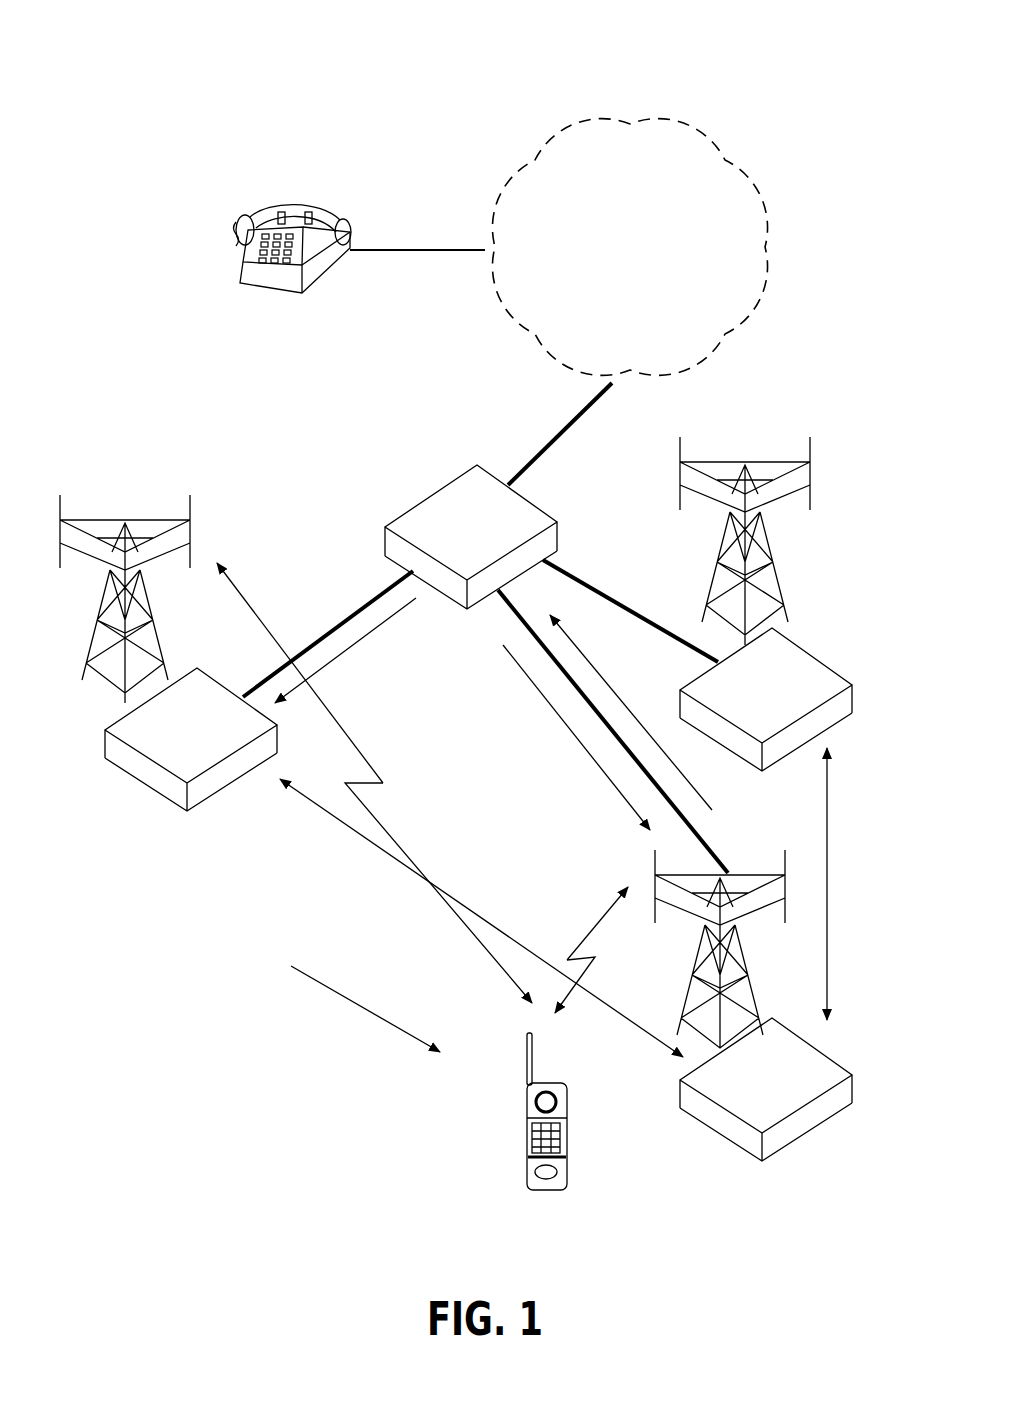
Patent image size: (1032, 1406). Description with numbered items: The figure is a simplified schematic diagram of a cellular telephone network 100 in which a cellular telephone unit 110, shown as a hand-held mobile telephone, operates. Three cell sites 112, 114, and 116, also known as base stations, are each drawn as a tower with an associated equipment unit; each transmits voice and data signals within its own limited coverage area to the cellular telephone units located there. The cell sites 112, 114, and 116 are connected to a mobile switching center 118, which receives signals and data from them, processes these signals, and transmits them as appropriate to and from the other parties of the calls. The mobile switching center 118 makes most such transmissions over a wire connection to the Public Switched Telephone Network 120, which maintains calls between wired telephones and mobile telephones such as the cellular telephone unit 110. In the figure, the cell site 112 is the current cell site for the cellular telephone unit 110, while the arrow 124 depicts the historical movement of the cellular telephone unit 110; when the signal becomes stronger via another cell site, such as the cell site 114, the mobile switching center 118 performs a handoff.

The cellular telephone network 100 is at (254, 80).
The cellular telephone unit 110 is at (527, 1138).
The cell site 112 is at (135, 520).
The cell site 114 is at (762, 875).
The cell site 116 is at (757, 462).
The mobile switching center 118 is at (437, 492).
The Public Switched Telephone Network 120 is at (657, 108).
The arrow 124 is at (338, 995).